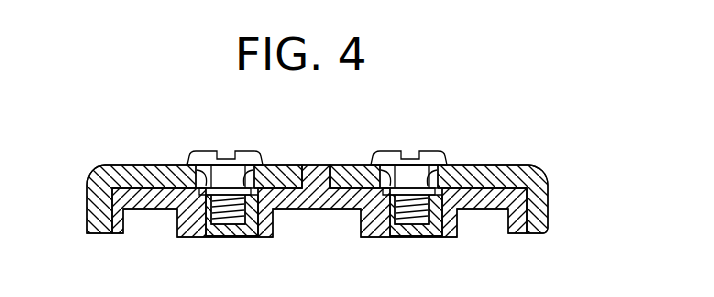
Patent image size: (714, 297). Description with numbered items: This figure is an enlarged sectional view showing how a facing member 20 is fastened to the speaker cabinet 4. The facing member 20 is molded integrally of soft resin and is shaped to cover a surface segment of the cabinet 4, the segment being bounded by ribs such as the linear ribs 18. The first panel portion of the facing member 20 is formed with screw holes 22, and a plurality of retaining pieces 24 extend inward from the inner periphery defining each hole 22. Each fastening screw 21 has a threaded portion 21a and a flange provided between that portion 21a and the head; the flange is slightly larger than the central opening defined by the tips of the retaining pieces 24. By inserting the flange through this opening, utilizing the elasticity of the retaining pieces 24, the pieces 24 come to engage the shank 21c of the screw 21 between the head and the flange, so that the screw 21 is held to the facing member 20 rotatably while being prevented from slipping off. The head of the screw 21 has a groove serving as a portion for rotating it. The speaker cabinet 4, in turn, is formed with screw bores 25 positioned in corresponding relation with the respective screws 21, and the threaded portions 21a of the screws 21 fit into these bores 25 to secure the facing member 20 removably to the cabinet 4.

The speaker cabinet 4 is at (150, 212).
The linear ribs 18 is at (320, 163).
The facing member 20 is at (527, 160).
The fastening screw 21 is at (294, 186).
The threaded portion 21a is at (233, 238).
The shank 21c is at (215, 158).
The screw hole 22 is at (178, 163).
The retaining pieces 24 is at (265, 238).
The screw bore 25 is at (177, 238).